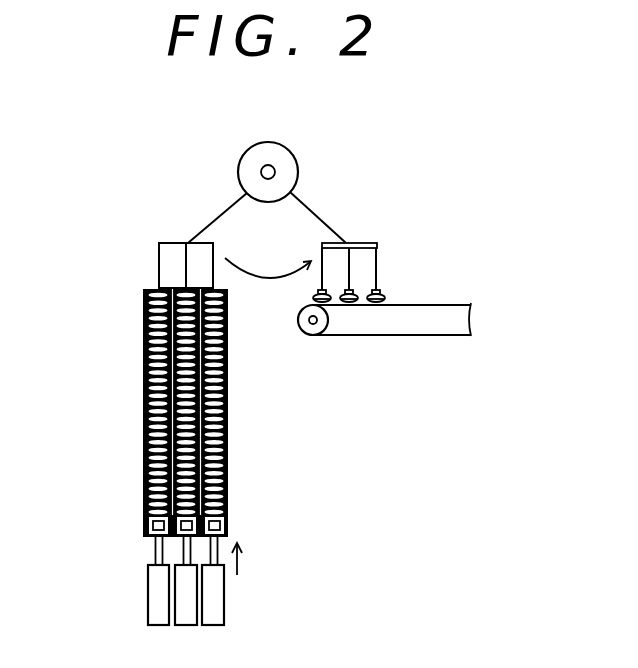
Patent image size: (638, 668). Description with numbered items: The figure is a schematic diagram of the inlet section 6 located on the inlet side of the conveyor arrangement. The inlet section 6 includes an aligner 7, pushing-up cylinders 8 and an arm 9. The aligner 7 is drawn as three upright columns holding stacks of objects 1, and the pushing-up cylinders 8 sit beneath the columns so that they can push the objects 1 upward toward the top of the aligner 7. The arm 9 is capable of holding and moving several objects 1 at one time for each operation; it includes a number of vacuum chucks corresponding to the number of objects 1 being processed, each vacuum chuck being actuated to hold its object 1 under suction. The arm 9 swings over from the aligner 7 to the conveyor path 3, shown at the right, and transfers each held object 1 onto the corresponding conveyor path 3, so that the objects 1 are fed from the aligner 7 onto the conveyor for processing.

The object 1 is at (143, 297).
The conveyor path 3 is at (362, 335).
The inlet section 6 is at (159, 432).
The aligner 7 is at (227, 400).
The pushing-up cylinder 8 is at (224, 596).
The arm 9 is at (227, 210).